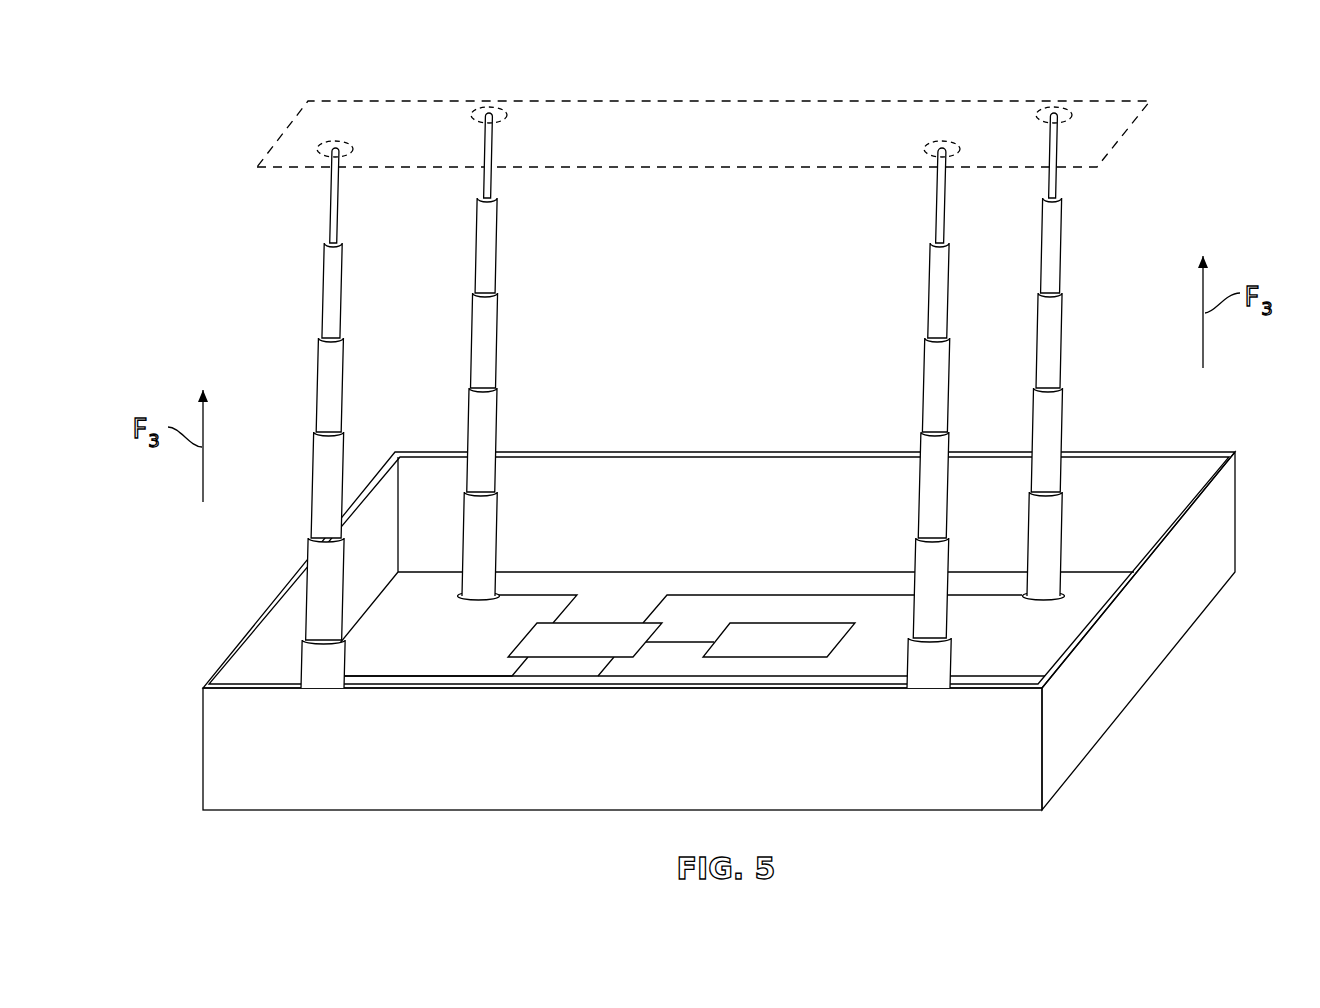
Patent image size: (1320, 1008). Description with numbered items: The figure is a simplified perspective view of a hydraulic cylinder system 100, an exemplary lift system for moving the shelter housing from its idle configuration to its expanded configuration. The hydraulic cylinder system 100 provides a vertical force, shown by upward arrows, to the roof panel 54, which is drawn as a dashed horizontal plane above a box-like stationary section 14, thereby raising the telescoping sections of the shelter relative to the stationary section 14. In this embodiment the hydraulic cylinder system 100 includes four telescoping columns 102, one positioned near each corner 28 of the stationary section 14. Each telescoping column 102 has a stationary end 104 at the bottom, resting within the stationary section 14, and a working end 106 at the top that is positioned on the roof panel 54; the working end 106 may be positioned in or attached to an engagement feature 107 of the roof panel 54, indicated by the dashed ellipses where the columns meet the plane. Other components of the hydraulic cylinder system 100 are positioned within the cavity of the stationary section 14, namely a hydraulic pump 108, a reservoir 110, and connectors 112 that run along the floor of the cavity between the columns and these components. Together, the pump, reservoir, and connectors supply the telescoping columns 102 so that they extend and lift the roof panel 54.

The stationary section 14 is at (1125, 675).
The corner 28 is at (397, 545).
The roof panel 54 is at (809, 118).
The hydraulic cylinder system 100 is at (207, 222).
The telescoping column 102 is at (348, 294).
The stationary end 104 is at (346, 665).
The working end 106 is at (341, 219).
The engagement feature 107 is at (336, 140).
The hydraulic pump 108 is at (566, 653).
The reservoir 110 is at (761, 653).
The connectors 112 is at (568, 593).